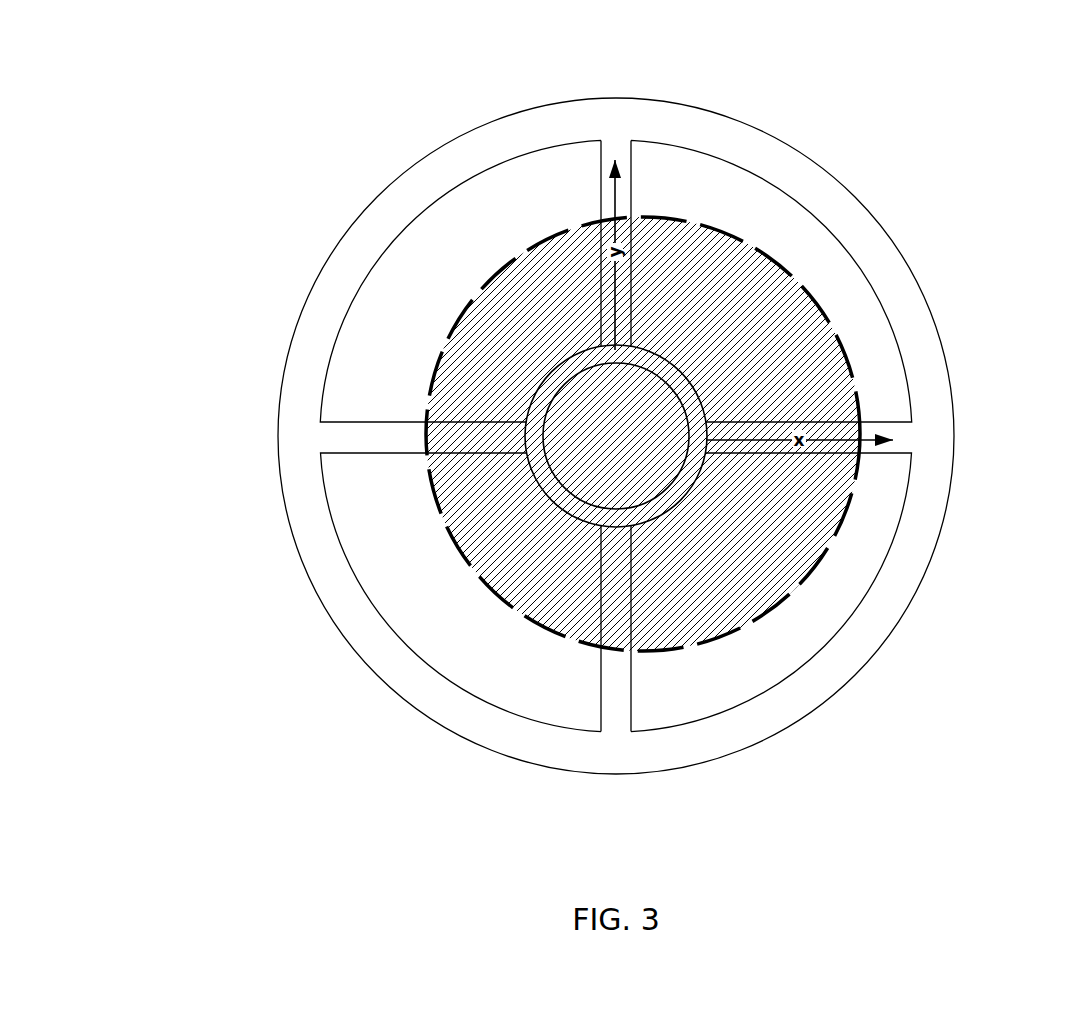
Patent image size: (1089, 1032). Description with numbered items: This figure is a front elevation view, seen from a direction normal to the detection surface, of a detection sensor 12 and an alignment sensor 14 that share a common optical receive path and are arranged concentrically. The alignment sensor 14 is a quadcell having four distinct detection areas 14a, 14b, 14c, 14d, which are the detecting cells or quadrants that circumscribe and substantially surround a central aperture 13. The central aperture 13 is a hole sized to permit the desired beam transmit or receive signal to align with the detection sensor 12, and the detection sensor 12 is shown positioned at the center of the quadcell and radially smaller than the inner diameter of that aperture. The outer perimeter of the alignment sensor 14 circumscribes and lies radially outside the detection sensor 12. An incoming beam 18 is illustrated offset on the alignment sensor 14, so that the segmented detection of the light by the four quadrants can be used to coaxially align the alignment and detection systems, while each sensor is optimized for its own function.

The alignment sensor 14 is at (400, 170).
The first detection area 14a is at (720, 173).
The second detection area 14b is at (902, 508).
The third detection area 14c is at (351, 557).
The fourth detection area 14d is at (347, 402).
The detection sensor 12 is at (588, 418).
The central aperture 13 is at (688, 503).
The incoming beam 18 is at (765, 303).